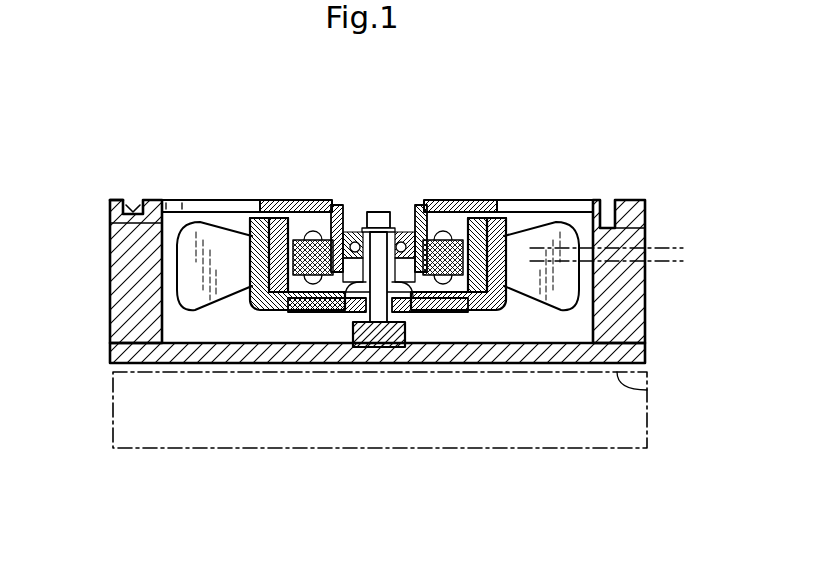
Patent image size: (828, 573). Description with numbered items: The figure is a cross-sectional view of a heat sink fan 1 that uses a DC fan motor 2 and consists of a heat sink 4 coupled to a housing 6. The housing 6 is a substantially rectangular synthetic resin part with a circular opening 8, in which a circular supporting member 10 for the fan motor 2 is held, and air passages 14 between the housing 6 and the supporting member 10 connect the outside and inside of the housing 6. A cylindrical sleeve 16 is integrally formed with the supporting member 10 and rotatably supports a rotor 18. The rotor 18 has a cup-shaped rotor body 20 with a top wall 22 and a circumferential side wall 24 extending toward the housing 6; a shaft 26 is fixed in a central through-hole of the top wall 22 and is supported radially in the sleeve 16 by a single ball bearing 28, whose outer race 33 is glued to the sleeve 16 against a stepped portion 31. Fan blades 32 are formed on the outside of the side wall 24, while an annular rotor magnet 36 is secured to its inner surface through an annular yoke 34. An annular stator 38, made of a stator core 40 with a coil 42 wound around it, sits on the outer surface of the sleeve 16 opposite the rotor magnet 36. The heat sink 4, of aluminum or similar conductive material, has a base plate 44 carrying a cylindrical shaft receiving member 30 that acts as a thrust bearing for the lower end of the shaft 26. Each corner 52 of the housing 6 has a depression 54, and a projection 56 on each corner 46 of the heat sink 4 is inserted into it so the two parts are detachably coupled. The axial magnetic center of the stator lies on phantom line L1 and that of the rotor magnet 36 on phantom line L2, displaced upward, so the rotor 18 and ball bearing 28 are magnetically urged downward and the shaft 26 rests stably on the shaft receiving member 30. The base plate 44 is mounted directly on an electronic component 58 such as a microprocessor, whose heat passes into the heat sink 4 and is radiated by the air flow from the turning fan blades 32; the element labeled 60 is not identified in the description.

The heat sink fan 1 is at (647, 316).
The fan motor 2 is at (420, 200).
The heat sink 4 is at (647, 350).
The housing 6 is at (262, 214).
The circular opening 8 is at (585, 200).
The circular supporting member 10 is at (481, 200).
The air passages 14 is at (567, 200).
The cylindrical sleeve 16 is at (445, 200).
The rotor 18 is at (528, 200).
The cup-shaped rotor body 20 is at (204, 200).
The top wall 22 is at (313, 310).
The circumferential side wall 24 is at (245, 292).
The shaft 26 is at (389, 200).
The ball bearing 28 is at (365, 200).
The shaft receiving member 30 is at (395, 347).
The stepped portion 31 is at (348, 312).
The fan blades 32 is at (190, 300).
The outer race 33 is at (425, 312).
The annular yoke 34 is at (265, 312).
The annular rotor magnet 36 is at (276, 200).
The annular stator 38 is at (302, 200).
The stator core 40 is at (320, 200).
The coil 42 is at (462, 292).
The base plate 44 is at (538, 352).
The corners 46 is at (117, 294).
The corners 52 is at (112, 205).
The depression 54 is at (133, 200).
The projection 56 is at (113, 250).
The electronic component 58 is at (617, 455).
The base corner 60 is at (647, 390).
The phantom line L1 is at (667, 263).
The phantom line L2 is at (653, 242).